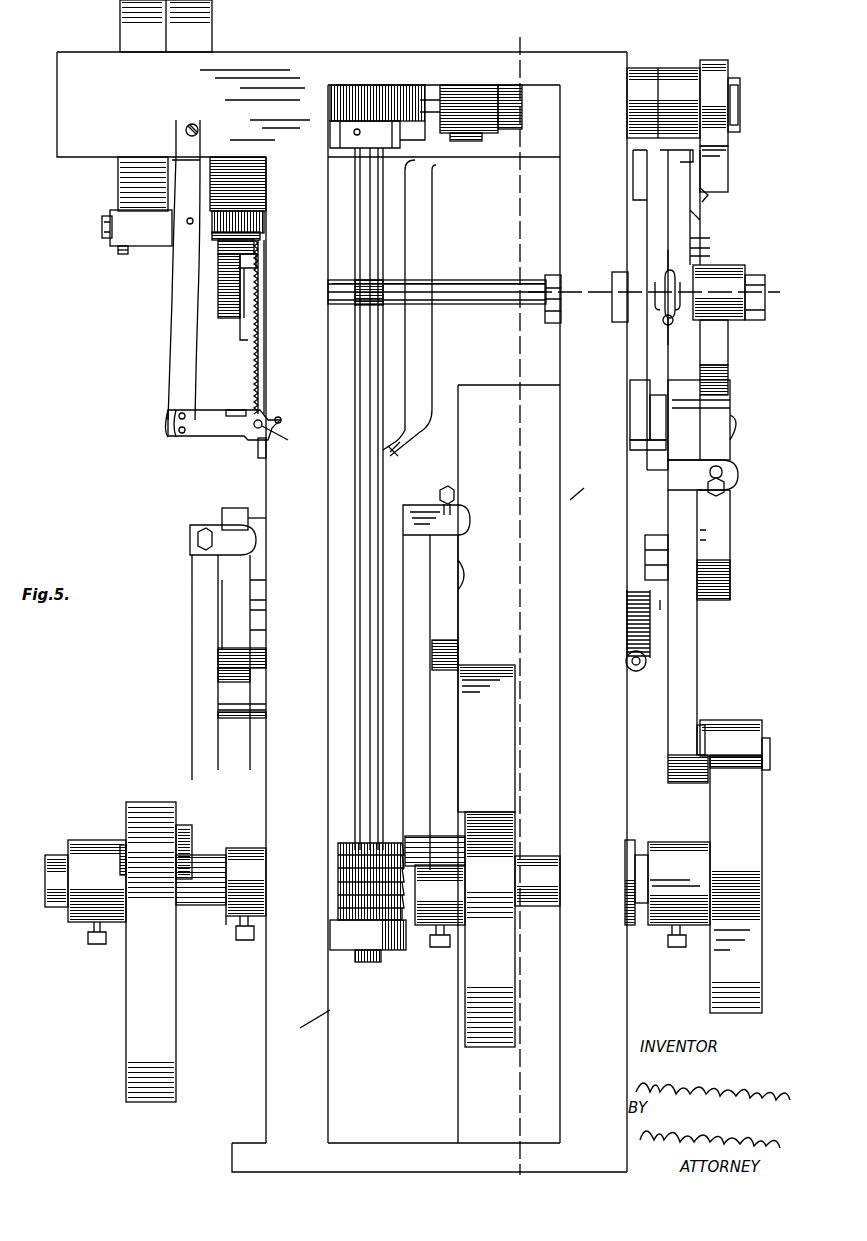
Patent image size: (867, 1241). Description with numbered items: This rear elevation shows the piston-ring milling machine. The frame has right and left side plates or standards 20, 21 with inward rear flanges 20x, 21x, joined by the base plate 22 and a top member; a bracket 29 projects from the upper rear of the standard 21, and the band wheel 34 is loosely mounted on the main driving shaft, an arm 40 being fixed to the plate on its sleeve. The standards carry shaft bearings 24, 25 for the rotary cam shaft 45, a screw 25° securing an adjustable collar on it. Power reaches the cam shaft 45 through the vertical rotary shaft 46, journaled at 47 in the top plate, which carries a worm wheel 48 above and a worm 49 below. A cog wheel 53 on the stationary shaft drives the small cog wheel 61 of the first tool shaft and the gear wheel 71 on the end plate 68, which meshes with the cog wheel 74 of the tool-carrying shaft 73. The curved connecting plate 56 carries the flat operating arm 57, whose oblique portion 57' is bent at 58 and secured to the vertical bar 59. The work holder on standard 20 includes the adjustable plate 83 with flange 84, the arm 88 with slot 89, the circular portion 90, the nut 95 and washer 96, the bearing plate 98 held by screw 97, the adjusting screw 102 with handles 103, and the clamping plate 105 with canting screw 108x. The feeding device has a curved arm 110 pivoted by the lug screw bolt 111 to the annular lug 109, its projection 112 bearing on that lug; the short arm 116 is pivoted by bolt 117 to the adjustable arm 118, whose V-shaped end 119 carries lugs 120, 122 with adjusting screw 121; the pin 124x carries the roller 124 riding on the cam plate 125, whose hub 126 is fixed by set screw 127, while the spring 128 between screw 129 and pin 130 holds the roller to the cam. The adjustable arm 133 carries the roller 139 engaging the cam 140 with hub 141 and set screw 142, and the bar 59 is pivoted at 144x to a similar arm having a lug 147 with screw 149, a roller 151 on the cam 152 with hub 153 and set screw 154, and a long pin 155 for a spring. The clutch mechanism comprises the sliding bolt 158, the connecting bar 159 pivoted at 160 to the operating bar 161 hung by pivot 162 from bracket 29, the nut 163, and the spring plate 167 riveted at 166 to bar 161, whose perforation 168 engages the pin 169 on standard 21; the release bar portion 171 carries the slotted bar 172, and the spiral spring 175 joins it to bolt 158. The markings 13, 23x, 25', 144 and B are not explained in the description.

The shaft axis 13 is at (649, 292).
The side plate or standard 20 is at (491, 612).
The flange 20x is at (572, 497).
The side plate or standard 21 is at (272, 484).
The flange 21x is at (312, 1030).
The base plate 22 is at (430, 1155).
The bearing 23x is at (490, 70).
The shaft bearing 24 is at (632, 848).
The shaft bearing 25 is at (246, 866).
The gear hub 25' is at (209, 933).
The bracket 29 is at (342, 104).
The band wheel 34 is at (122, 22).
The arm 40 is at (112, 204).
The rotary cam shaft 45 is at (542, 910).
The vertical rotary shaft 46 is at (376, 228).
The bearing 47 is at (396, 950).
The worm wheel 48 is at (350, 82).
The worm 49 is at (340, 868).
The cog wheel 53 is at (262, 188).
The connecting plate 56 is at (509, 675).
The operating arm 57 is at (420, 308).
The bent portion 57' is at (405, 458).
The right-angle bend 58 is at (240, 512).
The vertical bar 59 is at (236, 594).
The small cog wheel 61 is at (258, 262).
The end plate 68 is at (248, 330).
The gear wheel 71 is at (222, 257).
The tool-carrying rotary shaft 73 is at (500, 300).
The cog wheel 74 is at (222, 310).
The adjustable plate 83 is at (624, 274).
The flange 84 is at (606, 300).
The arm 88 is at (645, 388).
The slot 89 is at (660, 440).
The circular portion 90 is at (728, 376).
The nut 95 is at (760, 278).
The washer 96 is at (740, 270).
The screw 97 is at (705, 268).
The bearing plate 98 is at (700, 232).
The adjusting screw 102 is at (674, 318).
The handles 103 is at (672, 342).
The clamping plate 105 is at (700, 180).
The adjusting screw 108x is at (717, 189).
The annular lug 109 is at (640, 76).
The curved arm 110 is at (722, 160).
The lug screw bolt 111 is at (742, 118).
The projection or lug 112 is at (680, 80).
The short arm 116 is at (725, 450).
The pivot bolt 117 is at (672, 558).
The adjustable arm 118 is at (690, 662).
The V-shaped portion 119 is at (690, 508).
The lug 120 is at (738, 474).
The adjusting screw 121 is at (724, 488).
The lug 122 is at (740, 424).
The anti-friction roller 124 is at (745, 738).
The pin 124x is at (768, 760).
The cam plate 125 is at (722, 990).
The hub 126 is at (684, 854).
The set screw 127 is at (678, 948).
The spiral spring 128 is at (652, 624).
The screw 129 is at (634, 668).
The pin 130 is at (656, 606).
The adjustable arm 133 is at (436, 678).
The anti-friction roller 139 is at (508, 826).
The cam 140 is at (498, 1046).
The hub 141 is at (435, 880).
The set screw 142 is at (440, 948).
The shaft 144 is at (205, 716).
The pivot 144x is at (222, 678).
The lug 147 is at (228, 548).
The adjusting screw 149 is at (198, 542).
The anti-friction roller 151 is at (178, 826).
The cam 152 is at (128, 1008).
The hub 153 is at (100, 850).
The set screw 154 is at (96, 946).
The long pin 155 is at (245, 716).
The sliding bolt 158 is at (262, 212).
The connecting bar 159 is at (138, 240).
The pivot 160 is at (186, 222).
The operating bar 161 is at (186, 303).
The pivot 162 is at (186, 130).
The nut 163 is at (104, 228).
The rivets 166 is at (178, 416).
The spring plate 167 is at (230, 430).
The perforation 168 is at (286, 443).
The pin 169 is at (282, 416).
The bent portion 171 is at (293, 466).
The straight bar 172 is at (256, 514).
The spiral spring 175 is at (252, 386).
The section line B is at (525, 615).